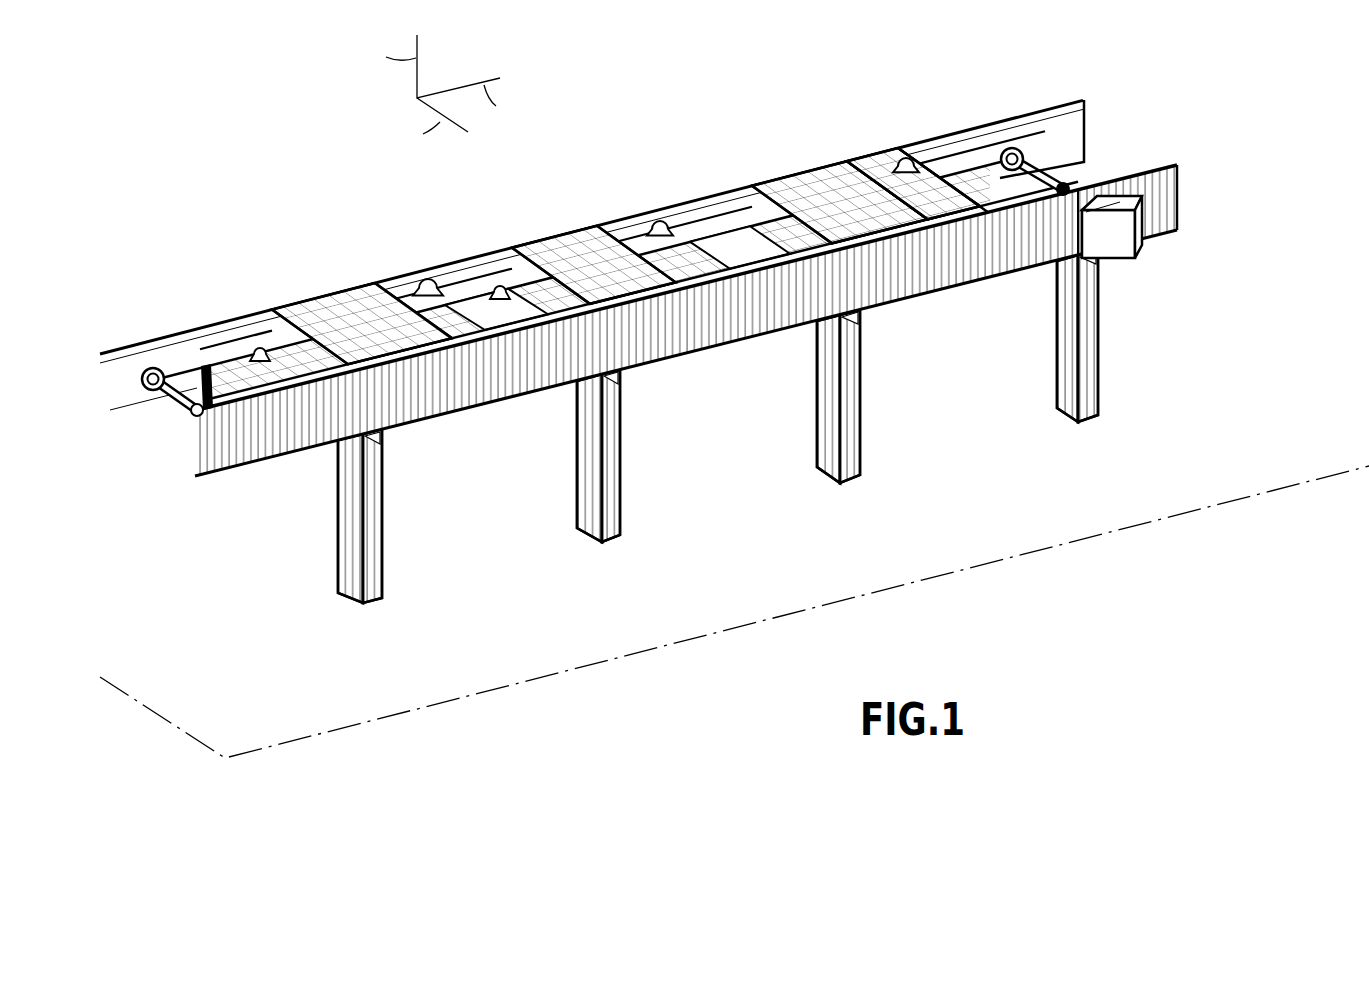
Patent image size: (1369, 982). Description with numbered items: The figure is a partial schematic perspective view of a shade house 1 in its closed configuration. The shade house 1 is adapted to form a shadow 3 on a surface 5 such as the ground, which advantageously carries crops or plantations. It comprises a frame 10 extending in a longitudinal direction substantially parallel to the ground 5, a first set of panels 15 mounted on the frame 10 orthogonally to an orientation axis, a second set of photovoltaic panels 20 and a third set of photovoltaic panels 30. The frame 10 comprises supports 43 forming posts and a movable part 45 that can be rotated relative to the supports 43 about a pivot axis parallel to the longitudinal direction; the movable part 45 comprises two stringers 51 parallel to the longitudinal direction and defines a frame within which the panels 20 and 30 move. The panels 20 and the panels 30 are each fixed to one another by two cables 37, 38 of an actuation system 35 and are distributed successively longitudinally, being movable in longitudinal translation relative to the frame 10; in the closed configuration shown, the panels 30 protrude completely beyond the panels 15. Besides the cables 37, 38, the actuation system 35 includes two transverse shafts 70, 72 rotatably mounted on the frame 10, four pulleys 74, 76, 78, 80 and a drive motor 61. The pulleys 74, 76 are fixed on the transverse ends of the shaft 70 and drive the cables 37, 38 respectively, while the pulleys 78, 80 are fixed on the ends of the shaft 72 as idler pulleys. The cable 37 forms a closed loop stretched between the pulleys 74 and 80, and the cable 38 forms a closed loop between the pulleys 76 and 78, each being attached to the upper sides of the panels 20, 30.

The shade house 1 is at (252, 168).
The shadow 3 is at (728, 470).
The surface 5 is at (734, 612).
The frame 10 is at (90, 388).
The first set of panels 15 is at (333, 300).
The second set of photovoltaic panels 20 is at (410, 285).
The third set of photovoltaic panels 30 is at (253, 352).
The actuation system 35 is at (1057, 160).
The cable 37 is at (986, 203).
The cable 38 is at (745, 212).
The supports 43 is at (375, 596).
The movable part 45 is at (155, 355).
The stringers 51 is at (205, 347).
The drive motor 61 is at (1120, 213).
The transverse shaft 70 is at (1050, 186).
The transverse shaft 72 is at (180, 412).
The pulley 74 is at (1062, 200).
The pulley 76 is at (1006, 172).
The pulley 78 is at (150, 365).
The pulley 80 is at (215, 418).